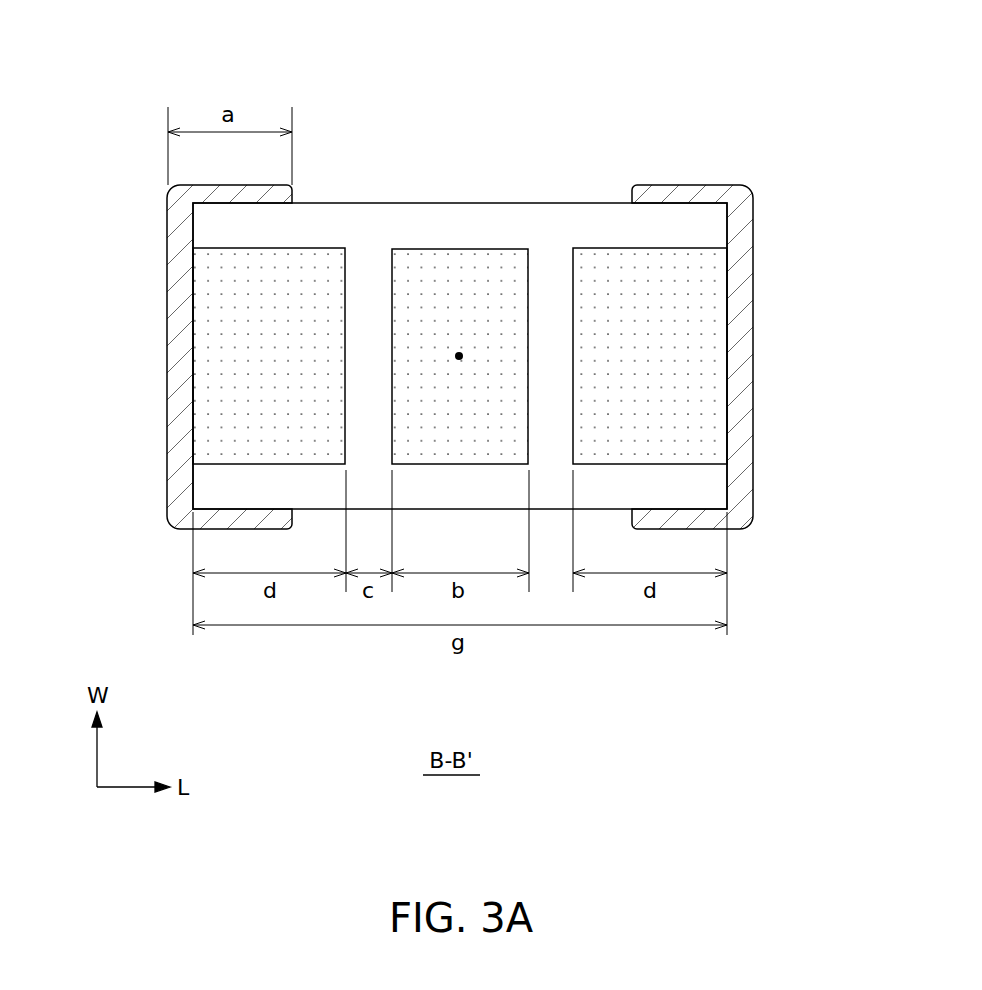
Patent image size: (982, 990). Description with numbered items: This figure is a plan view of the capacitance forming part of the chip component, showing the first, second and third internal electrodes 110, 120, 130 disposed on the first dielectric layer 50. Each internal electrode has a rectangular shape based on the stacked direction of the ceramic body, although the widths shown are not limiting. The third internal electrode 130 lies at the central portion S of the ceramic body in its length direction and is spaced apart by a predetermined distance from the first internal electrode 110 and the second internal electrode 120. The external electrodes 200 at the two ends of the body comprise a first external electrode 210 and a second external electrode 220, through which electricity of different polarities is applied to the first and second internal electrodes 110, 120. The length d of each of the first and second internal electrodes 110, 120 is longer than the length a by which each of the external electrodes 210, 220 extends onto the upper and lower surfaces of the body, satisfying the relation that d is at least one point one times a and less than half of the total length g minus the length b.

The first dielectric layer 50 is at (553, 210).
The first internal electrode 110 is at (210, 360).
The second internal electrode 120 is at (703, 358).
The third internal electrode 130 is at (479, 270).
The external electrodes 200 is at (605, 50).
The first external electrode 210 is at (288, 191).
The second external electrode 220 is at (648, 188).
The central portion S is at (459, 356).